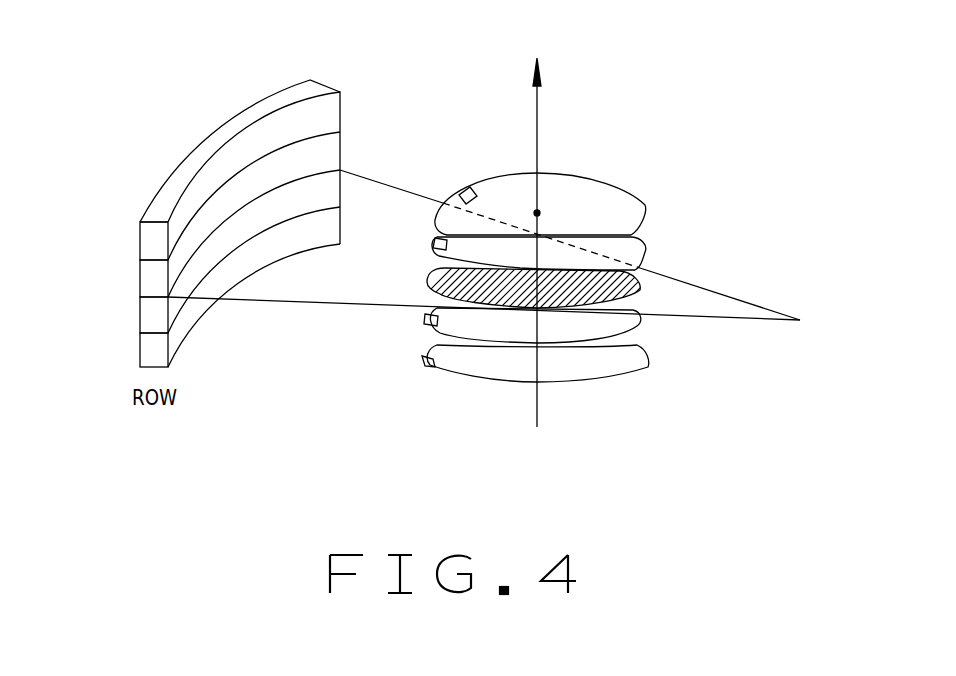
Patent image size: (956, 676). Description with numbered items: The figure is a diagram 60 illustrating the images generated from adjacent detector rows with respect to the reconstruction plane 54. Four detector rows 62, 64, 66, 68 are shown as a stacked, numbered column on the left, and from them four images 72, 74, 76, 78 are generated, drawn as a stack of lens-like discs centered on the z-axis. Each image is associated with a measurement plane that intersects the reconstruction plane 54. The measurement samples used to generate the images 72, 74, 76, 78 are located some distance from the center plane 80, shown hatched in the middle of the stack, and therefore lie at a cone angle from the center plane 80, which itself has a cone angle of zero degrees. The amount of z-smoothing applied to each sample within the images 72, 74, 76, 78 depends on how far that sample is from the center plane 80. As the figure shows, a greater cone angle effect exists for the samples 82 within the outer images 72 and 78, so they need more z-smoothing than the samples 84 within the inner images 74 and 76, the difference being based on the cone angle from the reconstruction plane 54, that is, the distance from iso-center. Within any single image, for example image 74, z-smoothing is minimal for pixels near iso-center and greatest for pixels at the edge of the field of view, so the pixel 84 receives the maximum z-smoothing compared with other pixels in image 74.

The reconstruction plane 54 is at (750, 320).
The diagram 60 is at (658, 127).
The detector row 62 is at (140, 355).
The detector row 64 is at (140, 315).
The detector row 66 is at (140, 278).
The detector row 68 is at (140, 240).
The image 72 is at (650, 372).
The image 74 is at (642, 322).
The image 76 is at (645, 243).
The image 78 is at (645, 205).
The center plane 80 is at (642, 290).
The samples 82 is at (464, 186).
The samples 84 is at (433, 246).